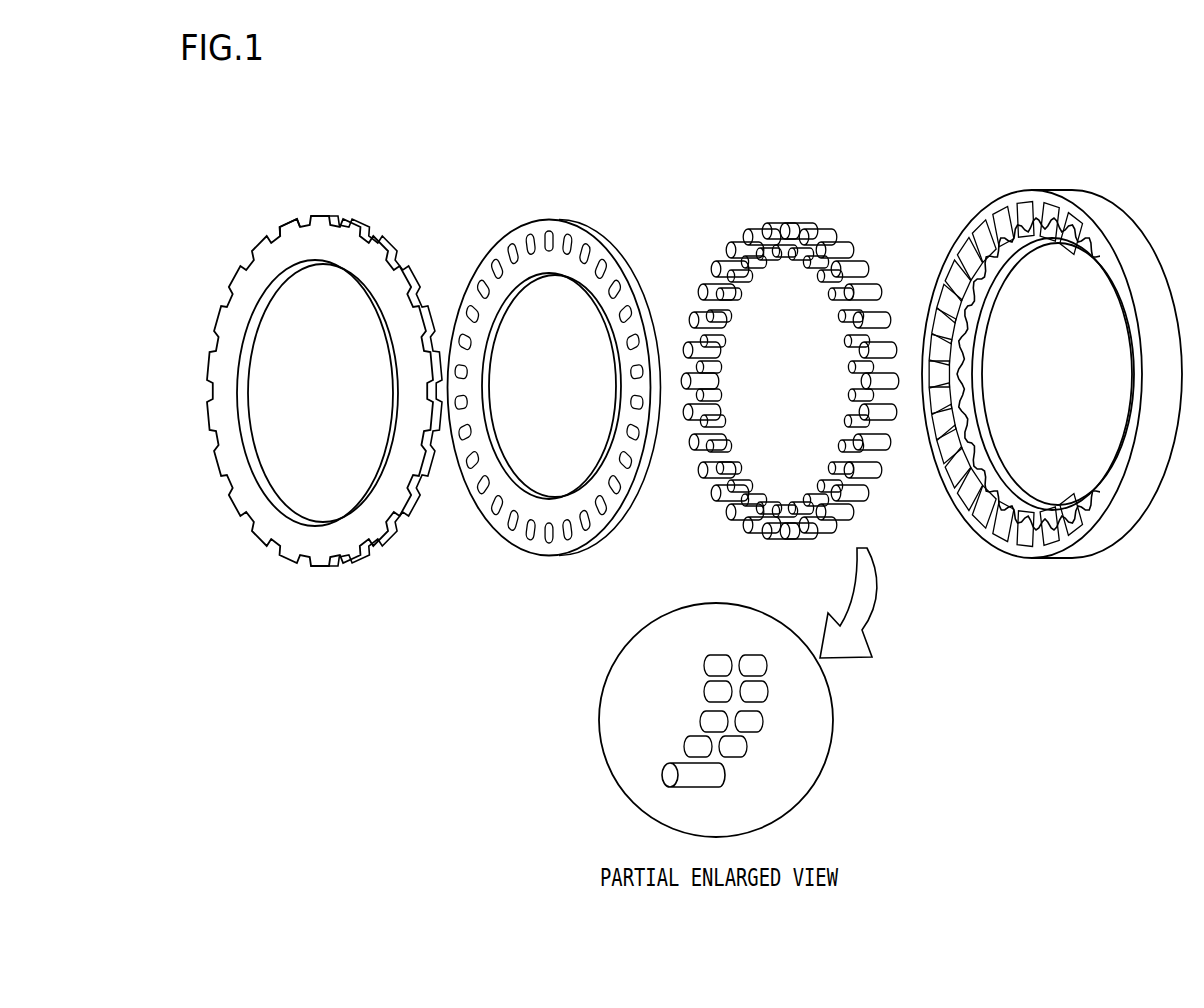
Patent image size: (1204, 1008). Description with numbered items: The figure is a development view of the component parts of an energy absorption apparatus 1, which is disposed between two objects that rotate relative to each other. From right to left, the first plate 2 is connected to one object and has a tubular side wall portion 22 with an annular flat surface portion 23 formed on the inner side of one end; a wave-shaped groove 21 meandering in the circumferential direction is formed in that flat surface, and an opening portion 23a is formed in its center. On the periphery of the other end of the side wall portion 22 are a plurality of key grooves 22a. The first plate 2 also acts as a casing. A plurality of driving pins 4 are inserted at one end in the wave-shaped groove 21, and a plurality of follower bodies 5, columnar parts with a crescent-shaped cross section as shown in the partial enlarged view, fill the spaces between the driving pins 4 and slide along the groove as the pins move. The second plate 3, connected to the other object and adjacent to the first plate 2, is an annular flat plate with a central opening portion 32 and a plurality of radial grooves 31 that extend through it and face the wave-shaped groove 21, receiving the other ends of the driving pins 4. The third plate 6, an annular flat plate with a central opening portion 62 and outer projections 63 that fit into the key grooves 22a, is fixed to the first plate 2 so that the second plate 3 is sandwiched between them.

The energy absorption apparatus 1 is at (420, 140).
The first plate 2 is at (963, 210).
The wave-shaped groove 21 is at (975, 378).
The side wall portion 22 is at (1069, 195).
The key grooves 22a is at (948, 282).
The flat surface portion 23 is at (977, 347).
The opening portion 23a is at (998, 428).
The second plate 3 is at (489, 234).
The radial grooves 31 is at (542, 223).
The opening portion 32 is at (487, 383).
The driving pins 4 is at (718, 366).
The follower bodies 5 is at (730, 238).
The third plate 6 is at (226, 242).
The opening portion 62 is at (250, 383).
The projections 63 is at (286, 223).